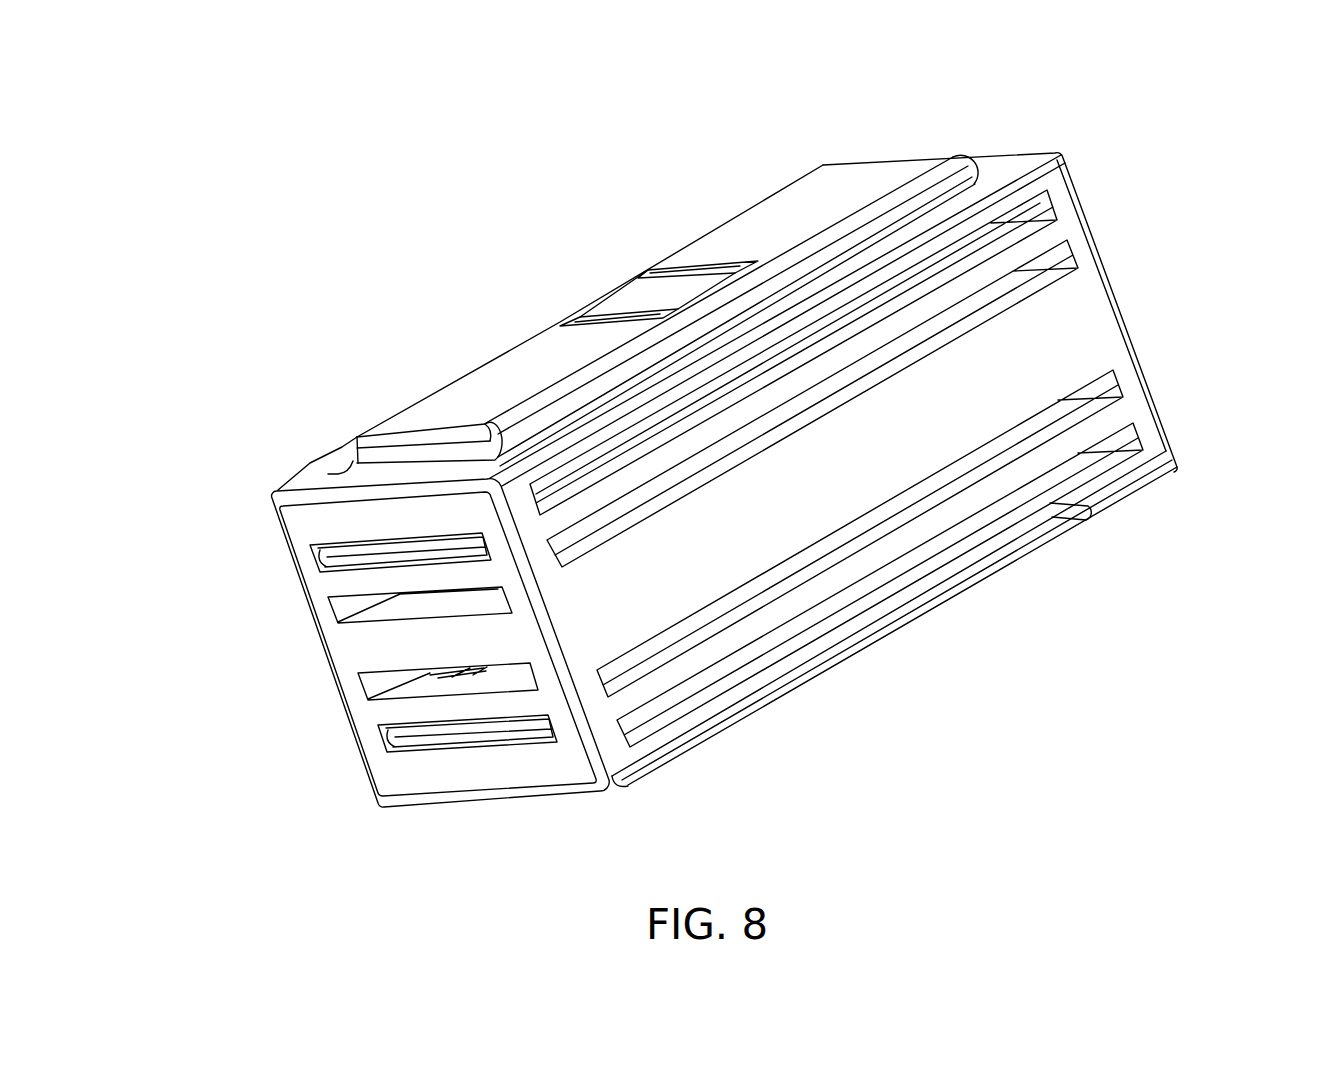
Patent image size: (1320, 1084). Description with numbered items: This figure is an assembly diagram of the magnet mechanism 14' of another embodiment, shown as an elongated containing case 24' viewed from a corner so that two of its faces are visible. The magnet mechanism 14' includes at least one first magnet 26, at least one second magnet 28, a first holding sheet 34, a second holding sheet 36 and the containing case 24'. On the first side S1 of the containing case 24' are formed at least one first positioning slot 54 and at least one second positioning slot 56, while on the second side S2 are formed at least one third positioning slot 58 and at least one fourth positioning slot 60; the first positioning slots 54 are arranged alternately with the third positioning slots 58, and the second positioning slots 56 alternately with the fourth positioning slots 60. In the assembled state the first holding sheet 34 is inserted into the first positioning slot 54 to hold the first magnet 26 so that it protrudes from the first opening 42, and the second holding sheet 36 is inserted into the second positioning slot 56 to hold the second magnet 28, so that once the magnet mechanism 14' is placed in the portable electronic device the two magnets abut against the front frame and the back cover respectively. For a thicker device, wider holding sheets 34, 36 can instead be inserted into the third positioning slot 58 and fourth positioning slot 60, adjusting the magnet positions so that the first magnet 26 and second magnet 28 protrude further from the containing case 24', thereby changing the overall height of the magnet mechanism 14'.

The magnet mechanism 14' is at (415, 450).
The containing case 24' is at (1000, 278).
The first magnet 26 is at (512, 372).
The second magnet 28 is at (668, 755).
The first side S1 is at (296, 517).
The second side S2 is at (1087, 309).
The first holding sheet 34 is at (335, 559).
The second holding sheet 36 is at (413, 740).
The first opening 42 is at (328, 474).
The first positioning slot 54 is at (312, 547).
The second positioning slot 56 is at (380, 727).
The third positioning slot 58 is at (1055, 203).
The fourth positioning slot 60 is at (1153, 432).